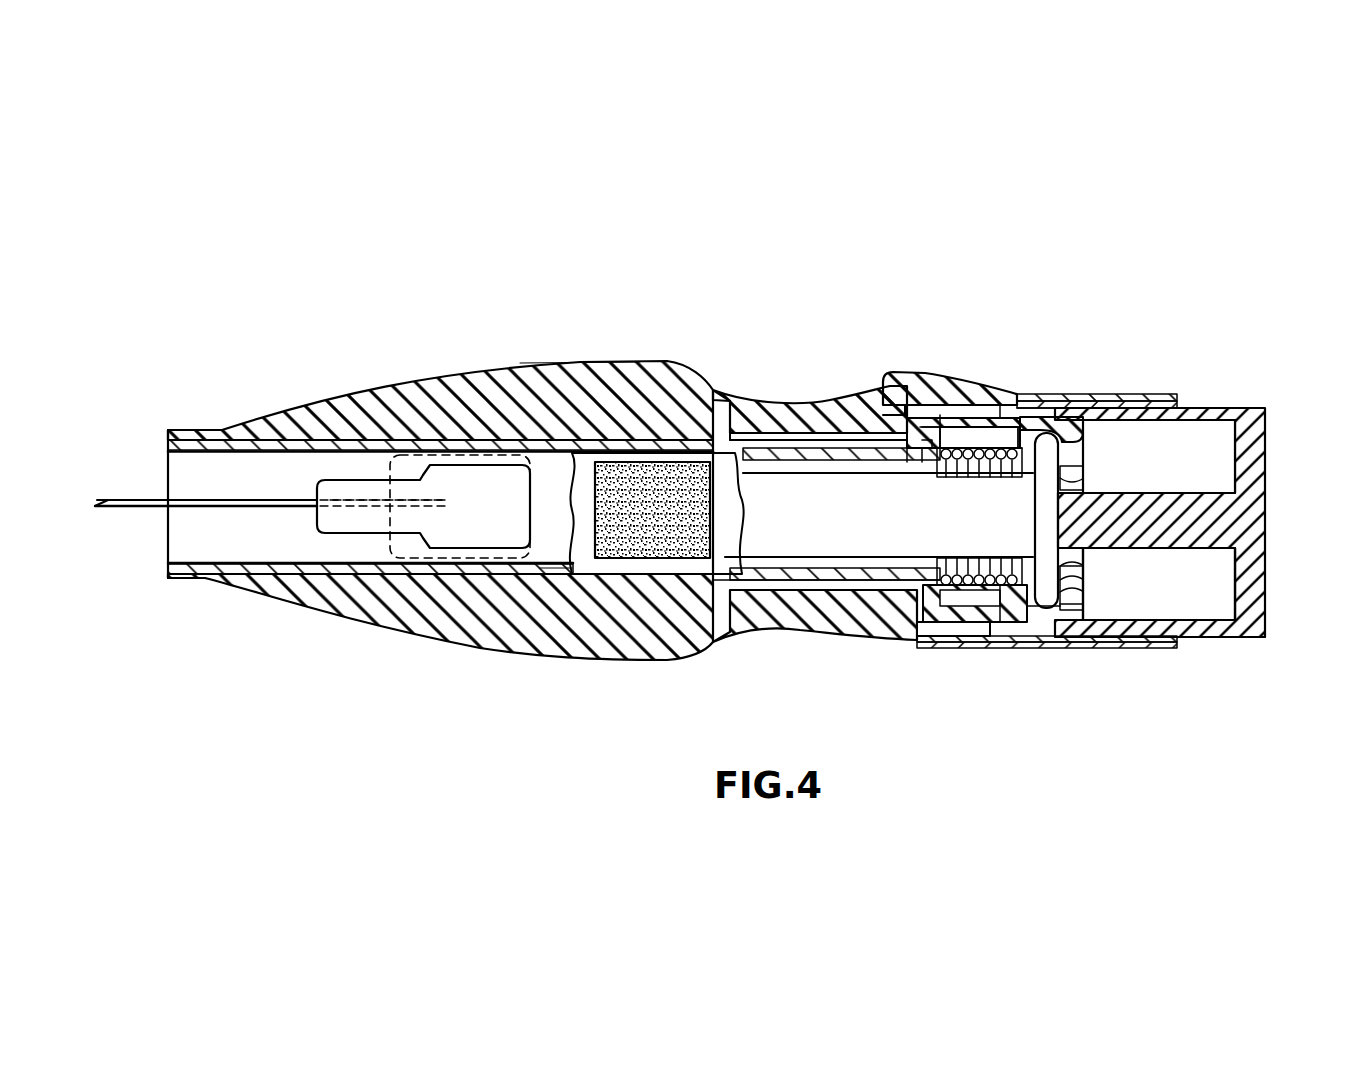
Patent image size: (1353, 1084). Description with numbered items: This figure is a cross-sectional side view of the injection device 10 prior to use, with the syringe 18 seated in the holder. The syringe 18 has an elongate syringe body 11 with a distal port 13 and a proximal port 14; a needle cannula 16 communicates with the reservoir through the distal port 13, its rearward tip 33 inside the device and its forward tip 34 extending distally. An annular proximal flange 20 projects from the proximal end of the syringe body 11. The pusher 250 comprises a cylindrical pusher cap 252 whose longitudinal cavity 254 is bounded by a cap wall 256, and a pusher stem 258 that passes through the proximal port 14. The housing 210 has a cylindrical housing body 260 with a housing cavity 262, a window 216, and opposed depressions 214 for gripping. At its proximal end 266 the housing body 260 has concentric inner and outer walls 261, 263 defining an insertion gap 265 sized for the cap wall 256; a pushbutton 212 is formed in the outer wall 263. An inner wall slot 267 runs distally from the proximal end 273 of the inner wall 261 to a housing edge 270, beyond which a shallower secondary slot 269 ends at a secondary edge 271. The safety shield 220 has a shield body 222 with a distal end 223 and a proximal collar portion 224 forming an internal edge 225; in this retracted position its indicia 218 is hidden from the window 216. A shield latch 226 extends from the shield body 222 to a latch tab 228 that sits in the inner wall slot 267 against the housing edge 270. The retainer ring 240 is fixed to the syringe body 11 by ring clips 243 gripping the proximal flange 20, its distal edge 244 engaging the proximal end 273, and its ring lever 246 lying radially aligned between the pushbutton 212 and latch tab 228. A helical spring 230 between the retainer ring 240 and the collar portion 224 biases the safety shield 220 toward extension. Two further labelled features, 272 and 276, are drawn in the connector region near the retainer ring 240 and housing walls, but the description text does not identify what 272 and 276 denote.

The injection device 10 is at (690, 272).
The syringe body 11 is at (758, 519).
The distal port 13 is at (372, 505).
The proximal port 14 is at (1058, 560).
The needle cannula 16 is at (128, 498).
The syringe 18 is at (560, 578).
The proximal flange 20 is at (1062, 474).
The rearward tip 33 is at (440, 500).
The forward tip 34 is at (98, 502).
The housing 210 is at (577, 358).
The pushbutton 212 is at (893, 380).
The depressions 214 is at (740, 402).
The window 216 is at (390, 455).
The indicia 218 is at (628, 490).
The safety shield 220 is at (530, 576).
The shield body 222 is at (470, 577).
The distal end 223 is at (170, 566).
The collar portion 224 is at (955, 606).
The internal edge 225 is at (917, 582).
The shield latch 226 is at (838, 460).
The latch tab 228 is at (940, 430).
The helical spring 230 is at (1020, 608).
The retainer ring 240 is at (1083, 430).
The ring clips 243 is at (1083, 434).
The distal edge 244 is at (985, 610).
The ring lever 246 is at (925, 430).
The pusher 250 is at (1214, 408).
The pusher cap 252 is at (1268, 434).
The longitudinal cavity 254 is at (1153, 600).
The cap wall 256 is at (1193, 637).
The pusher stem 258 is at (1115, 640).
The housing body 260 is at (308, 400).
The inner wall 261 is at (965, 612).
The housing cavity 262 is at (556, 445).
The outer wall 263 is at (1160, 400).
The insertion gap 265 is at (987, 440).
The proximal end 266 is at (1182, 396).
The inner wall slot 267 is at (950, 440).
The secondary slot 269 is at (822, 440).
The housing edge 270 is at (822, 432).
The secondary edge 271 is at (735, 438).
The thread root 272 is at (962, 432).
The proximal end of the inner wall 273 is at (975, 572).
The fitting end wall 276 is at (1062, 428).